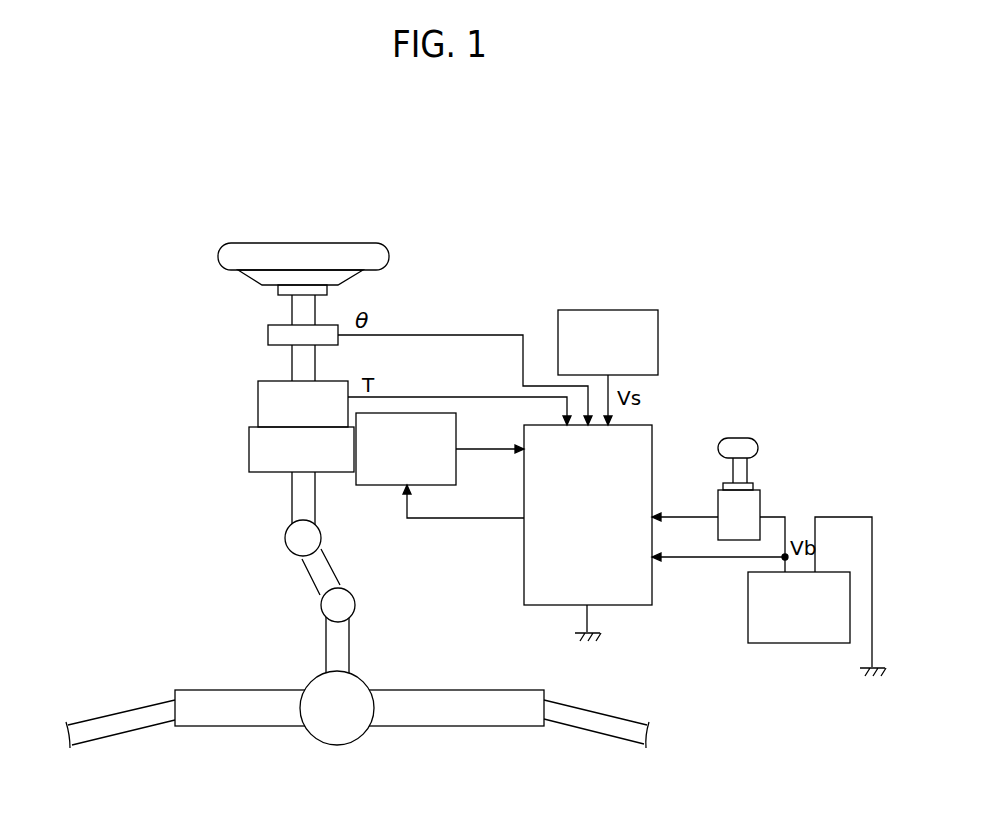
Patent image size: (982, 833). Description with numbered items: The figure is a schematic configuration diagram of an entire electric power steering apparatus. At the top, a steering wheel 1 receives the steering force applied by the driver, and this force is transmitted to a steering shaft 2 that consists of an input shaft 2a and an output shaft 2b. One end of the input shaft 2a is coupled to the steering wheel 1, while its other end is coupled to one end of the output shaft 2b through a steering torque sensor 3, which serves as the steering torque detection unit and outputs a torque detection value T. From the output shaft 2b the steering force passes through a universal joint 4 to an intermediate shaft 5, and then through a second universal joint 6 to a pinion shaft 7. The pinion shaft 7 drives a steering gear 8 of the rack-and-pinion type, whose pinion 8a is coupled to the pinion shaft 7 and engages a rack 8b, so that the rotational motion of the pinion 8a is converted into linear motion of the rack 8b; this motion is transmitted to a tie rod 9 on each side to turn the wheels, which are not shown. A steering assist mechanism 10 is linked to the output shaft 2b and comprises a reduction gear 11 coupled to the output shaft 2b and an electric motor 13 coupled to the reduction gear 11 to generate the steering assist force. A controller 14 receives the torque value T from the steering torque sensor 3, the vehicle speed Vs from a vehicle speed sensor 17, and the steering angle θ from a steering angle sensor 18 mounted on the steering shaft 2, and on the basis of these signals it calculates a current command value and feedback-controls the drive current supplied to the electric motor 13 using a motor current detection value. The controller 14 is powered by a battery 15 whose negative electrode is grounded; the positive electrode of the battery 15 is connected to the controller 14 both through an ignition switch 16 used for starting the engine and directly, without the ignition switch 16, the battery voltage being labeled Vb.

The steering wheel 1 is at (307, 243).
The steering shaft 2 is at (265, 407).
The input shaft 2a is at (295, 367).
The output shaft 2b is at (292, 506).
The steering torque sensor 3 is at (258, 392).
The universal joint 4 is at (285, 540).
The intermediate shaft 5 is at (308, 572).
The universal joint 6 is at (321, 605).
The pinion shaft 7 is at (328, 638).
The steering gear 8 is at (359, 676).
The pinion 8a is at (310, 682).
The rack 8b is at (462, 690).
The tie rod 9 is at (132, 708).
The steering assist mechanism 10 is at (340, 440).
The reduction gear 11 is at (249, 447).
The electric motor 13 is at (457, 438).
The controller 14 is at (652, 441).
The battery 15 is at (800, 645).
The ignition switch 16 is at (762, 500).
The vehicle speed sensor 17 is at (566, 310).
The steering angle sensor 18 is at (268, 336).